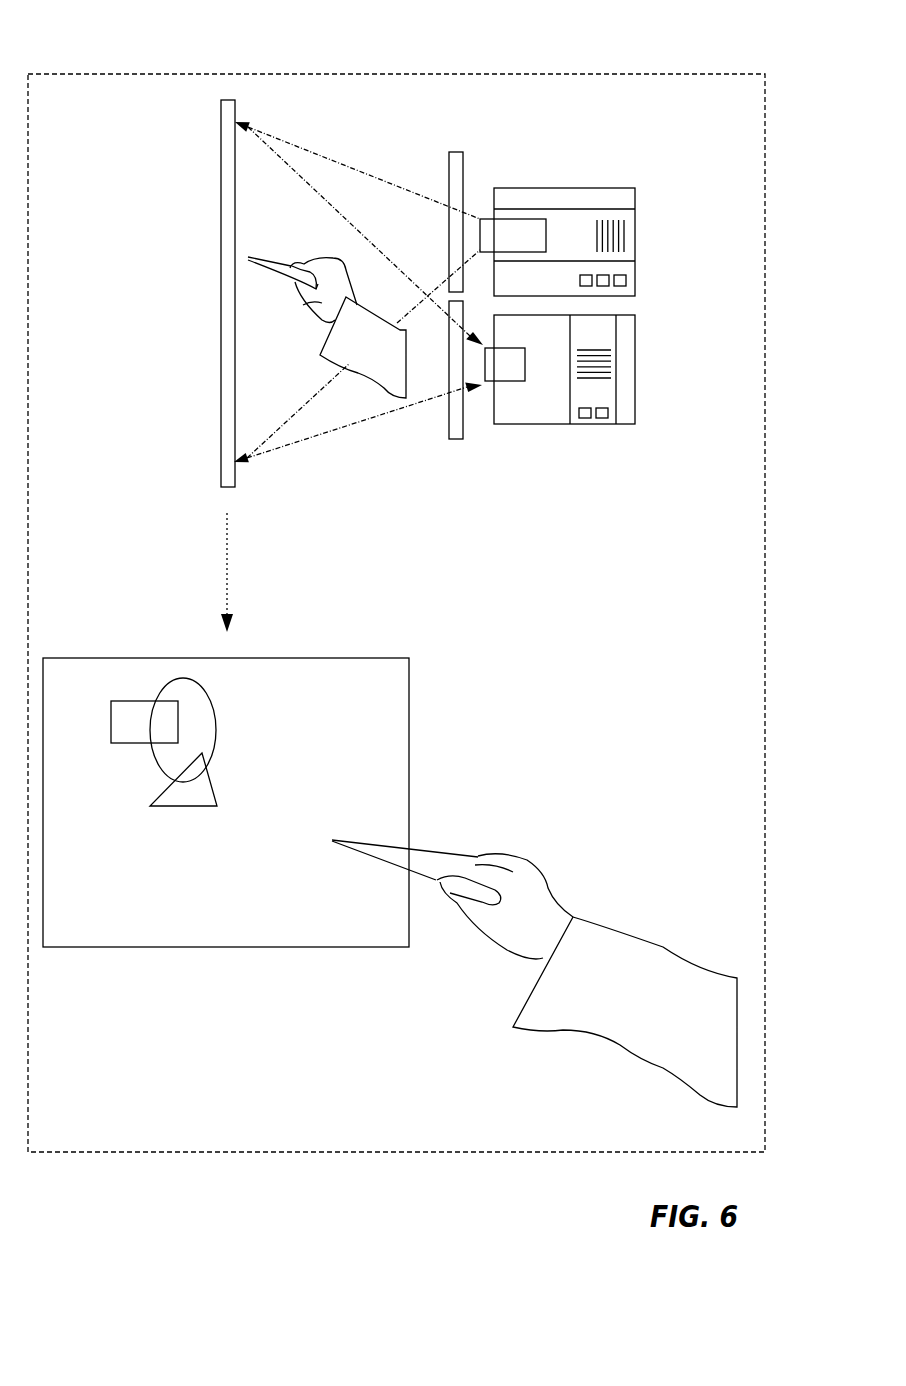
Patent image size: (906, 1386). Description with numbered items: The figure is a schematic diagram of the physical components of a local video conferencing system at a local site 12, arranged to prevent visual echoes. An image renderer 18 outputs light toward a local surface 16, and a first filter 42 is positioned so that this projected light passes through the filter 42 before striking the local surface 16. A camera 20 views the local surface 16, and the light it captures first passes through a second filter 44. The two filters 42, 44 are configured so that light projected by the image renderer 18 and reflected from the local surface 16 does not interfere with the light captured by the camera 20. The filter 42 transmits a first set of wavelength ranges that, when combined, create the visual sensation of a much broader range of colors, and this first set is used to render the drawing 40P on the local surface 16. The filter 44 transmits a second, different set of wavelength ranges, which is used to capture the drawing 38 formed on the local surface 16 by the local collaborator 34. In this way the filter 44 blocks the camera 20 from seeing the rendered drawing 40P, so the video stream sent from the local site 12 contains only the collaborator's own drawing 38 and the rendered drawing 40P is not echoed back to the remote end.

The local site 12 is at (760, 131).
The local surface 16 is at (235, 238).
The image renderer 18 is at (613, 193).
The camera 20 is at (625, 408).
The local collaborator 34 is at (320, 303).
The drawing 38 is at (320, 822).
The rendered drawing 40P is at (205, 693).
The filter 42 is at (455, 168).
The filter 44 is at (453, 423).